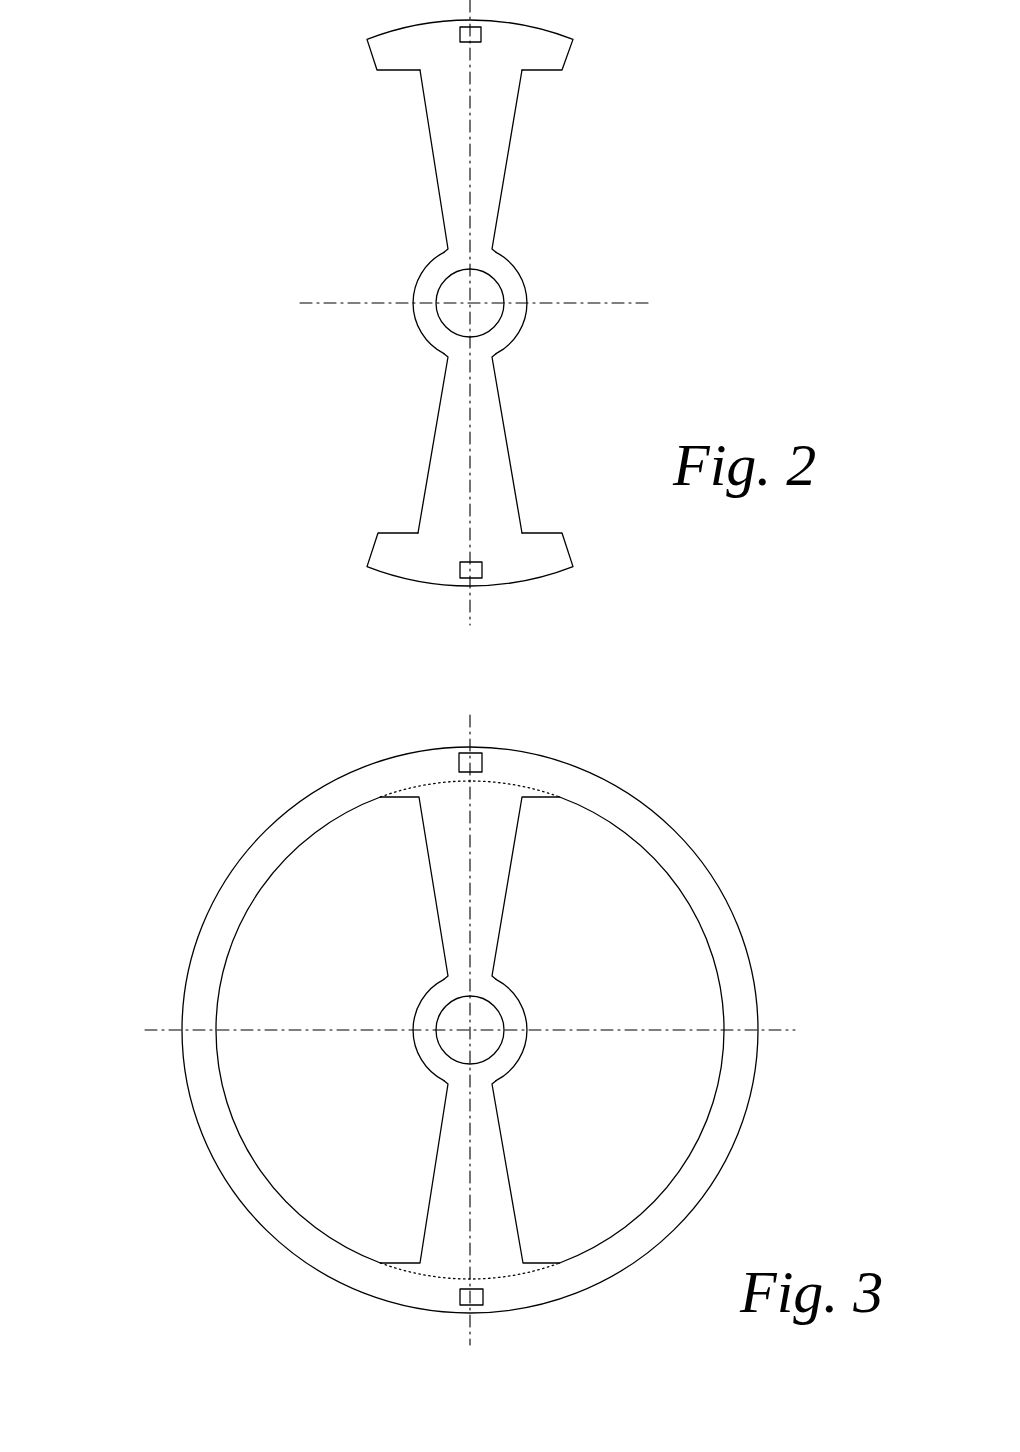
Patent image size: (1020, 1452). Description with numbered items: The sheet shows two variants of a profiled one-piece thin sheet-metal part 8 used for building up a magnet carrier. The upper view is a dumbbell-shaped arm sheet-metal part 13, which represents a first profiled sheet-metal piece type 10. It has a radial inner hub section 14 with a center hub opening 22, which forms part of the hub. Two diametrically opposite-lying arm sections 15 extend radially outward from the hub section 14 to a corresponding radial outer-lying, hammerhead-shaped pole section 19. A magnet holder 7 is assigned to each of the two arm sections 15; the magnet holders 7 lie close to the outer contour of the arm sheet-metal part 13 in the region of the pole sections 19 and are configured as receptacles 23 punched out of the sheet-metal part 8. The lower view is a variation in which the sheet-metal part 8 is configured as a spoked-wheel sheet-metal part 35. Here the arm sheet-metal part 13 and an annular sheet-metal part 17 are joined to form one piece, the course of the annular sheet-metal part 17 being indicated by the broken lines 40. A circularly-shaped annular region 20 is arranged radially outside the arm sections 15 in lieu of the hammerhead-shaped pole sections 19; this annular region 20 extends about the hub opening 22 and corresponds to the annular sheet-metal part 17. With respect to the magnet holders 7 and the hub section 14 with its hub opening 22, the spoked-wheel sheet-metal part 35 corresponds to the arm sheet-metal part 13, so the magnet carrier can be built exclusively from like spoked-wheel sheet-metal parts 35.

In FIG. 2, the magnet holder 7 is at (456, 50).
In FIG. 3, the magnet holder 7 is at (452, 778).
In FIG. 2, the sheet-metal part 8 is at (481, 112).
In FIG. 3, the sheet-metal part 8 is at (485, 849).
In FIG. 2, the first profiled sheet-metal piece type 10 is at (587, 142).
In FIG. 2, the arm sheet-metal part 13 is at (502, 407).
In FIG. 3, the arm sheet-metal part 13 is at (512, 923).
In FIG. 2, the hub section 14 is at (512, 283).
In FIG. 3, the hub section 14 is at (513, 1012).
In FIG. 2, the arm section 15 is at (492, 173).
In FIG. 3, the arm section 15 is at (453, 892).
In FIG. 3, the annular sheet-metal part 17 is at (198, 938).
In FIG. 2, the pole section 19 is at (542, 55).
In FIG. 3, the annular region 20 is at (509, 1030).
In FIG. 2, the hub opening 22 is at (458, 318).
In FIG. 3, the hub opening 22 is at (460, 1045).
In FIG. 2, the receptacle 23 is at (460, 33).
In FIG. 3, the receptacle 23 is at (471, 1029).
In FIG. 3, the spoked-wheel sheet-metal part 35 is at (758, 1055).
In FIG. 3, the broken lines 40 is at (493, 783).